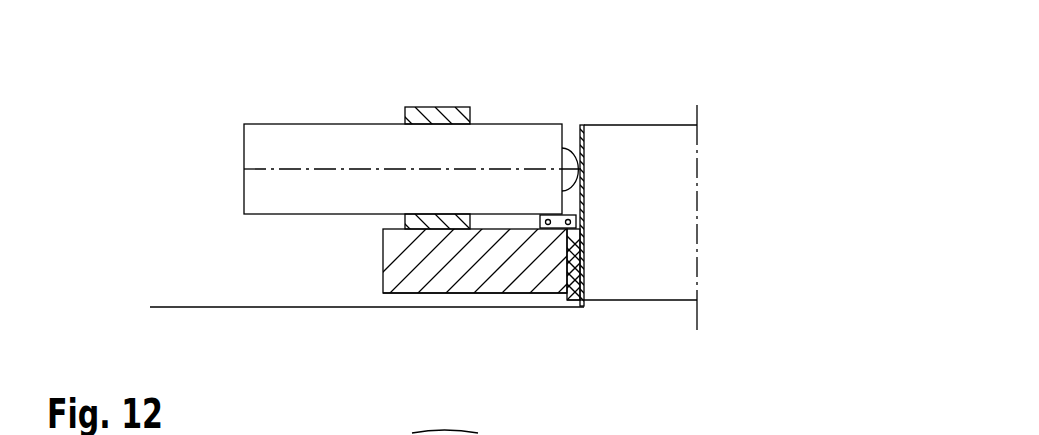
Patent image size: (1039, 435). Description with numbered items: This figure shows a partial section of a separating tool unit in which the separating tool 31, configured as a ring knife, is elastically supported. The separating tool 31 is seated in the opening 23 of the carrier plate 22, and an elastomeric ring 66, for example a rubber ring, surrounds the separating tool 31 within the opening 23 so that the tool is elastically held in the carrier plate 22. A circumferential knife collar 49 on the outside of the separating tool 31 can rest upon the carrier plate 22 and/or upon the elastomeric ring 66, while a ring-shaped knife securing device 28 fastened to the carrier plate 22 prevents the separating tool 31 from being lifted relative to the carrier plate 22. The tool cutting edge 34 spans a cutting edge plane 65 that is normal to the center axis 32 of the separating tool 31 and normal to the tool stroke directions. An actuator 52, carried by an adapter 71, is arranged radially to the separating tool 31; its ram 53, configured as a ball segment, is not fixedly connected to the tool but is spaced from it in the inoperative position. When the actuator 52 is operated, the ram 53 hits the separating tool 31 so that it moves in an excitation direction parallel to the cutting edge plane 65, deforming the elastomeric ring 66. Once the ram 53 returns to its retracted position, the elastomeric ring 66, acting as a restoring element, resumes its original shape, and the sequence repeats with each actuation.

The cutting edge plane 65 is at (185, 307).
The actuator 52 is at (300, 155).
The adapter 71 is at (410, 115).
The knife securing device 28 is at (553, 222).
The ram 53 is at (566, 160).
The separating tool 31 is at (582, 135).
The knife collar 49 is at (583, 192).
The center axis 32 is at (697, 115).
The carrier plate 22 is at (408, 262).
The opening 23 is at (545, 290).
The elastomeric ring 66 is at (573, 268).
The tool cutting edge 34 is at (583, 306).